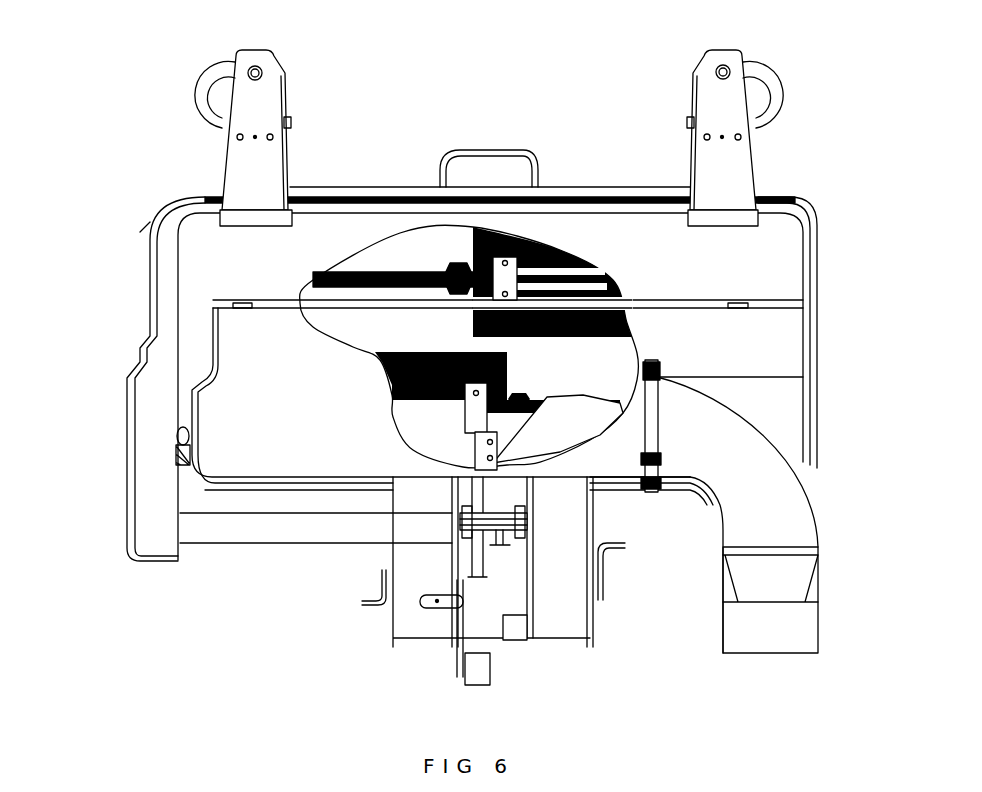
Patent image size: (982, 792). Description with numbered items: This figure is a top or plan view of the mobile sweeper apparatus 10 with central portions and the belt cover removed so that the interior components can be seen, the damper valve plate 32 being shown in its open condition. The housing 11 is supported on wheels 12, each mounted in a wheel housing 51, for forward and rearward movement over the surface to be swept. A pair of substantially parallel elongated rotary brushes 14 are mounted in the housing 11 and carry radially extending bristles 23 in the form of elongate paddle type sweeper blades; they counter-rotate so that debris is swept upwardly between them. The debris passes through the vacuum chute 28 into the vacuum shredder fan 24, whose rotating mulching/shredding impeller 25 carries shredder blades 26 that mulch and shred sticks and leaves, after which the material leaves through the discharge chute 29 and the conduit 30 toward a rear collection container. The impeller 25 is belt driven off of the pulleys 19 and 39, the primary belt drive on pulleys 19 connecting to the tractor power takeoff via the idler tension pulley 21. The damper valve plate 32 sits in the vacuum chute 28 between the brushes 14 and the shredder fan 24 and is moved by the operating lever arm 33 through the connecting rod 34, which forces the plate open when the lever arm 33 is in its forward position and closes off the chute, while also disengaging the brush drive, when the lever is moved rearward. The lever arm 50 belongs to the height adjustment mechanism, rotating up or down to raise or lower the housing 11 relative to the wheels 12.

The mobile sweeper apparatus 10 is at (367, 182).
The housing 11 is at (695, 337).
The wheels 12 is at (286, 73).
The rotary brushes 14 is at (473, 252).
The pulleys 19 is at (483, 562).
The idler tension pulley 21 is at (517, 637).
The bristles 23 is at (473, 227).
The vacuum shredder fan 24 is at (383, 447).
The mulching/shredding impeller 25 is at (445, 437).
The shredder blades 26 is at (600, 403).
The vacuum chute 28 is at (770, 352).
The discharge chute 29 is at (760, 480).
The conduit 30 is at (740, 630).
The damper valve plate 32 is at (333, 308).
The operating lever arm 33 is at (176, 431).
The connecting rod 34 is at (202, 372).
The pulley 39 is at (517, 540).
The lever arm 50 is at (567, 193).
The wheel housing 51 is at (240, 172).